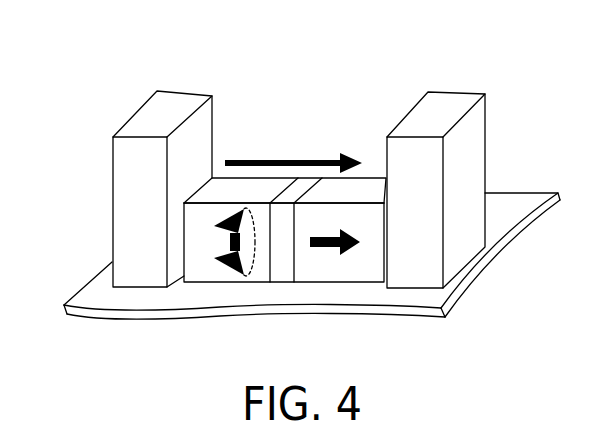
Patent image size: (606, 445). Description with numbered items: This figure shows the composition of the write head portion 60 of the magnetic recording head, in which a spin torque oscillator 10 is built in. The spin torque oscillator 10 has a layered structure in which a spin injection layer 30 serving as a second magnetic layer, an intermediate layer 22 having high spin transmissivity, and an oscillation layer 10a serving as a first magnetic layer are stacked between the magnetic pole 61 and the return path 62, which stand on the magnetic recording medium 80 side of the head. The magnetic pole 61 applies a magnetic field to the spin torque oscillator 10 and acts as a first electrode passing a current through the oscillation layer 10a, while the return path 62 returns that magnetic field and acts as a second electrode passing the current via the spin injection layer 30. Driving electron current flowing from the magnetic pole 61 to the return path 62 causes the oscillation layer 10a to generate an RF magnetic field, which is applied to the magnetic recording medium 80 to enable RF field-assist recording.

The spin torque oscillator 10 is at (295, 156).
The oscillation layer 10a is at (238, 188).
The intermediate layer 22 is at (302, 176).
The spin injection layer 30 is at (361, 190).
The write head portion 60 is at (301, 159).
The magnetic pole 61 is at (135, 168).
The return path 62 is at (478, 152).
The magnetic recording medium 80 is at (102, 302).